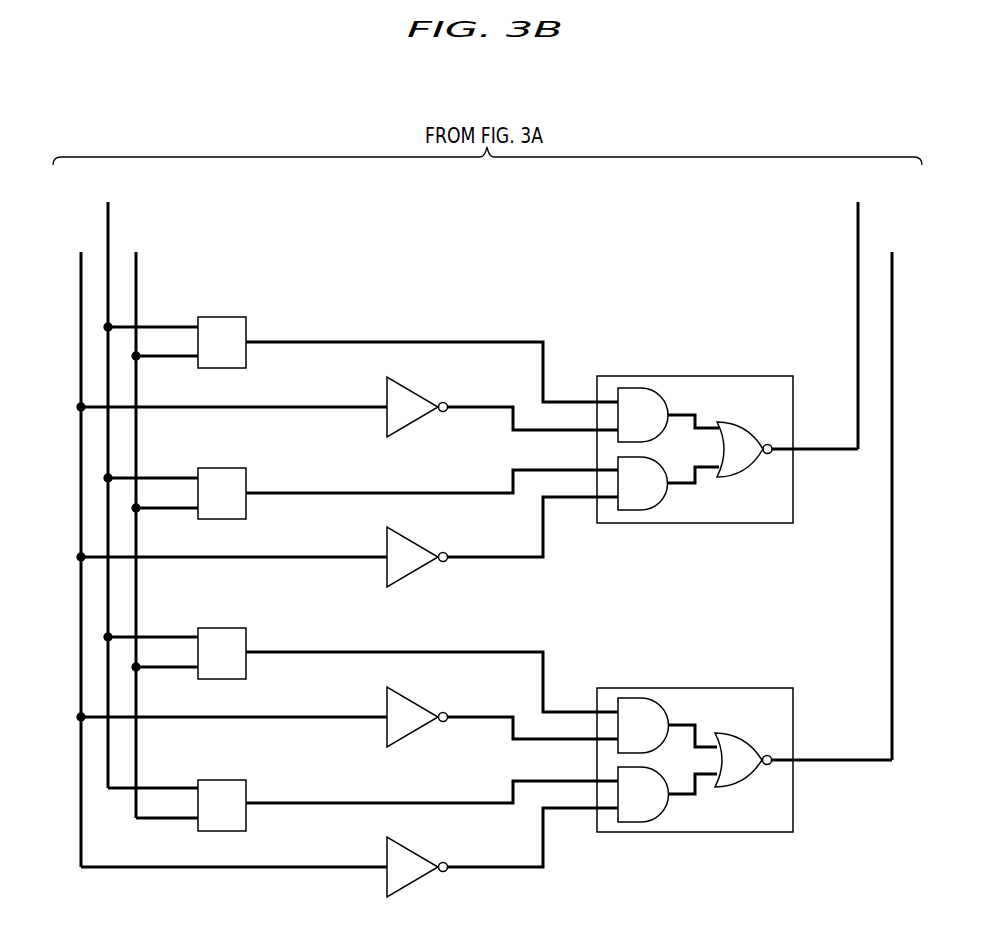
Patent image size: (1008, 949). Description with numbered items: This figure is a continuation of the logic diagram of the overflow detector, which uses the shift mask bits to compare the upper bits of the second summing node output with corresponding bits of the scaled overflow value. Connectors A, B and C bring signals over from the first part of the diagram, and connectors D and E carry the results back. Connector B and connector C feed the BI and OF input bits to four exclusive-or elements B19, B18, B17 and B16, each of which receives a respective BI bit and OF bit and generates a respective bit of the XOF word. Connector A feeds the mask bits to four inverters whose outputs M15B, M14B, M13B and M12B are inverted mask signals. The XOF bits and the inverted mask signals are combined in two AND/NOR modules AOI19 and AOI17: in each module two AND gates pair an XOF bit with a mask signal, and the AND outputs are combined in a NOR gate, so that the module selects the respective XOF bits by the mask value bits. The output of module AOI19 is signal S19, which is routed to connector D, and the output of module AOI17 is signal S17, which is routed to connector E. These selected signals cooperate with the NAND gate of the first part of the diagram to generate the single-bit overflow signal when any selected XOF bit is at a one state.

The connector A from FIG. 3A A is at (81, 542).
The connector B from FIG. 3A B is at (108, 478).
The connector C from FIG. 3A C is at (136, 518).
The connector D to FIG. 3A D is at (858, 308).
The connector E to FIG. 3A E is at (892, 489).
The XOR2H exclusive-OR gate B19 is at (363, 348).
The XOR2H exclusive-OR gate B18 is at (363, 495).
The XOR2H exclusive-OR gate B17 is at (363, 658).
The XOR2H exclusive-OR gate B16 is at (363, 807).
The INRB inverter producing M15B from MASK15 M15B is at (349, 413).
The INRB inverter producing M14B from MASK14 M14B is at (349, 548).
The INRB inverter producing M13B from MASK13 M13B is at (349, 723).
The INRB inverter producing M12B from MASK12 M12B is at (349, 859).
The AOI22 AND-OR-invert gate AOI19 is at (695, 449).
The AOI22 AND-OR-invert gate AOI17 is at (695, 760).
The output signal S19 is at (815, 436).
The output signal S17 is at (832, 747).